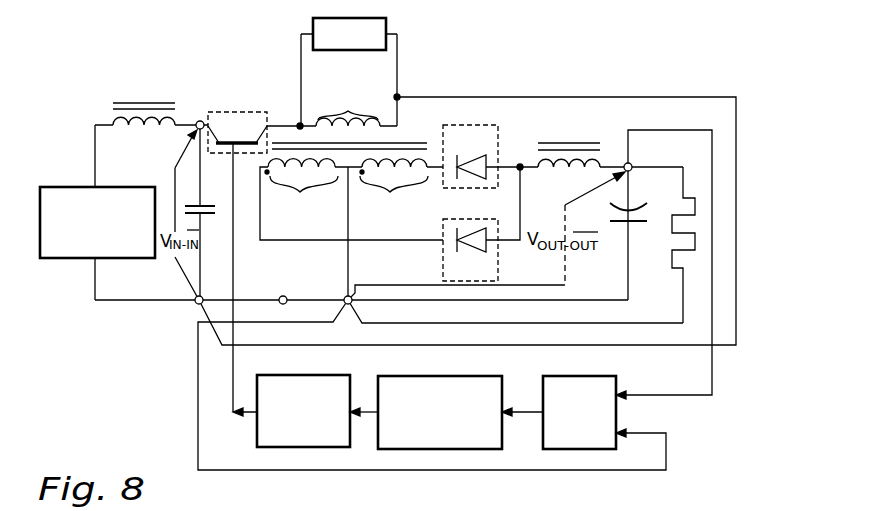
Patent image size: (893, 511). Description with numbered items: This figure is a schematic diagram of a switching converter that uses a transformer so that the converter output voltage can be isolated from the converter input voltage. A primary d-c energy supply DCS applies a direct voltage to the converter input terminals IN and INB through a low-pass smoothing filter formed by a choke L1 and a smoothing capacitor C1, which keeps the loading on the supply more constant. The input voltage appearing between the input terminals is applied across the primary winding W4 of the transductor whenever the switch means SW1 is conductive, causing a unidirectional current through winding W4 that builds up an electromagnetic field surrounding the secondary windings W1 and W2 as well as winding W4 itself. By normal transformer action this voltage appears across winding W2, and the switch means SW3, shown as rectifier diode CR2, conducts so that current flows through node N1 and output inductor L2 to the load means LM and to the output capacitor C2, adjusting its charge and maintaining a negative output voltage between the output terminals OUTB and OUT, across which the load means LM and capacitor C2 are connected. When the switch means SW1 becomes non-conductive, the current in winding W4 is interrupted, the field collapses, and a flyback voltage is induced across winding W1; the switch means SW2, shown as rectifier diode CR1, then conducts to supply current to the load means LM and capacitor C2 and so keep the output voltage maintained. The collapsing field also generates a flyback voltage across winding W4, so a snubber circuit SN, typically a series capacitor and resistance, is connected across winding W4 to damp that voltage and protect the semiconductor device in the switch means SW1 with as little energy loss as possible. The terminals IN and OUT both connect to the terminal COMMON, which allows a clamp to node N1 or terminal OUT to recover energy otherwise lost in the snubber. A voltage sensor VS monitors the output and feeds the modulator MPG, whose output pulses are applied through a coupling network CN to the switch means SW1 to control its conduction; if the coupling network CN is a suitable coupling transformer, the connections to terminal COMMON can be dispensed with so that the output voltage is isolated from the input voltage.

The primary d-c energy supply DCS is at (110, 259).
The choke L1 is at (144, 103).
The converter input terminal IN is at (200, 119).
The switch means SW1 is at (253, 111).
The snubber circuit SN is at (388, 30).
The primary winding W4 is at (370, 82).
The rectifier diode CR2 is at (470, 156).
The switch means SW3 is at (497, 131).
The output inductor L2 is at (569, 145).
The converter output terminal OUT is at (632, 163).
The node N1 is at (522, 172).
The secondary winding W1 is at (301, 189).
The secondary winding W2 is at (394, 189).
The smoothing capacitor C1 is at (204, 198).
The terminal COMMON is at (292, 279).
The output terminal OUT-bar OUTB is at (346, 295).
The input terminal IN-bar INB is at (196, 306).
The switch means SW2 is at (444, 263).
The rectifier diode CR1 is at (470, 250).
The output capacitor C2 is at (618, 213).
The load means LM is at (672, 259).
The coupling network CN is at (291, 375).
The modulator MPG is at (483, 375).
The voltage sensor VS is at (596, 375).